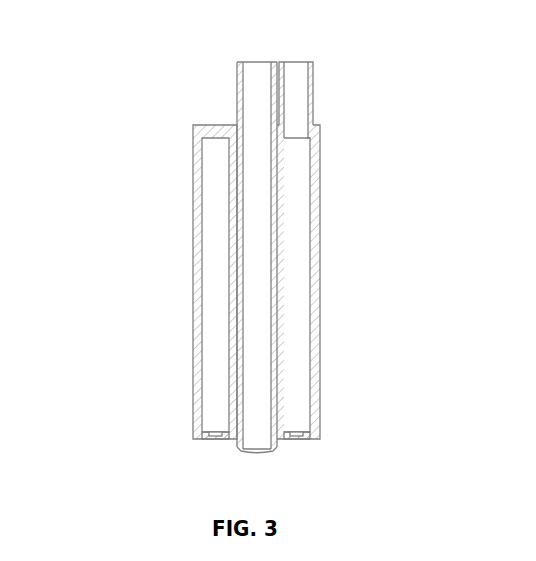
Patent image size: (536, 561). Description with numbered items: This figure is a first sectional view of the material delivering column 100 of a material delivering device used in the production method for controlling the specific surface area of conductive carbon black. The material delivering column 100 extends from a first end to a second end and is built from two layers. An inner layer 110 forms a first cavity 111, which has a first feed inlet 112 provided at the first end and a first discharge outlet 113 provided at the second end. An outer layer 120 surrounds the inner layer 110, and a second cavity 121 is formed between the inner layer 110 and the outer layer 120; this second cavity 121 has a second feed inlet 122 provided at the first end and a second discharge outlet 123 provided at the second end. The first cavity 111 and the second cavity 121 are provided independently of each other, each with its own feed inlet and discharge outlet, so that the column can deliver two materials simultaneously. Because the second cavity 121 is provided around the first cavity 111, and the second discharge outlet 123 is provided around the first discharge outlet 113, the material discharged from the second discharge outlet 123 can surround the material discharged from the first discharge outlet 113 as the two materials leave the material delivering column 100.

The material delivering column 100 is at (271, 18).
The inner layer 110 is at (237, 184).
The first cavity 111 is at (257, 281).
The first feed inlet 112 is at (257, 97).
The first discharge outlet 113 is at (257, 450).
The outer layer 120 is at (320, 207).
The second cavity 121 is at (218, 213).
The second feed inlet 122 is at (297, 99).
The second discharge outlet 123 is at (213, 438).